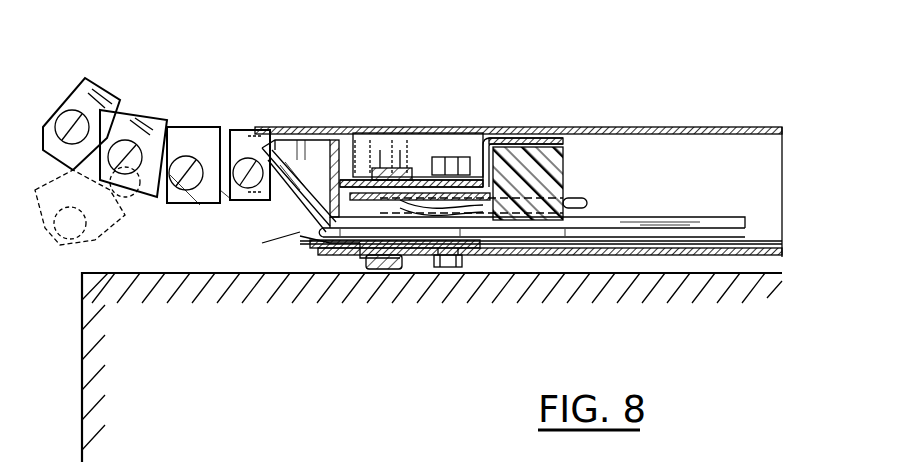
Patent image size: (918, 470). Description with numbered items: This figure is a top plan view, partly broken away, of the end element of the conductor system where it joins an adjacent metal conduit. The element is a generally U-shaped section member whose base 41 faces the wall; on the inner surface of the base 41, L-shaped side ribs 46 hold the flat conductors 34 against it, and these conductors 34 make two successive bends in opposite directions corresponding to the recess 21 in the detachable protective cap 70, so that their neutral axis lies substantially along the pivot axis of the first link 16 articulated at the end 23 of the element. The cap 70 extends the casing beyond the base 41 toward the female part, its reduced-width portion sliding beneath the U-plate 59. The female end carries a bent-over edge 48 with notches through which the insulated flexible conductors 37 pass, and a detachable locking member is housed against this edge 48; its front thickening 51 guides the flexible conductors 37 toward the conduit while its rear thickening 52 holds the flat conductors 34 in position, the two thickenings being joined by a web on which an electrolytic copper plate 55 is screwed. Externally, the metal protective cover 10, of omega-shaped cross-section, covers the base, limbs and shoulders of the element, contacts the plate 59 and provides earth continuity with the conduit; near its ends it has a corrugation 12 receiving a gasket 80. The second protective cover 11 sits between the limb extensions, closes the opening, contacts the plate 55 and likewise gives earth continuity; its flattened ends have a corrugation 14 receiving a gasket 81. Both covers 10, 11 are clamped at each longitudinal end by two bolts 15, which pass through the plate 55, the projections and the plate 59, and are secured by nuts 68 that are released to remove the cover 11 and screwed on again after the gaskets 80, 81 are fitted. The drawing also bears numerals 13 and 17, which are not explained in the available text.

The protective cover 10 is at (573, 258).
The protective cover 11 is at (617, 130).
The corrugation 12 is at (383, 260).
The housing 13 is at (405, 215).
The corrugation 14 is at (392, 170).
The bolt 15 is at (452, 262).
The link 16 is at (97, 92).
The nut 17 is at (184, 177).
The recess 21 is at (262, 243).
The end 23 is at (246, 131).
The conductor 34 is at (292, 197).
The insulated flexible conductor 37 is at (297, 152).
The base 41 is at (685, 256).
The L-shaped side rib 46 is at (728, 217).
The bent-over edge 48 is at (318, 185).
The front thickening 51 is at (507, 167).
The rear thickening 52 is at (338, 233).
The electrolytic copper plate 55 is at (437, 170).
The U-plate 59 is at (423, 260).
The nut 68 is at (452, 163).
The protective cap 70 is at (322, 251).
The gasket 80 is at (360, 265).
The gasket 81 is at (360, 197).